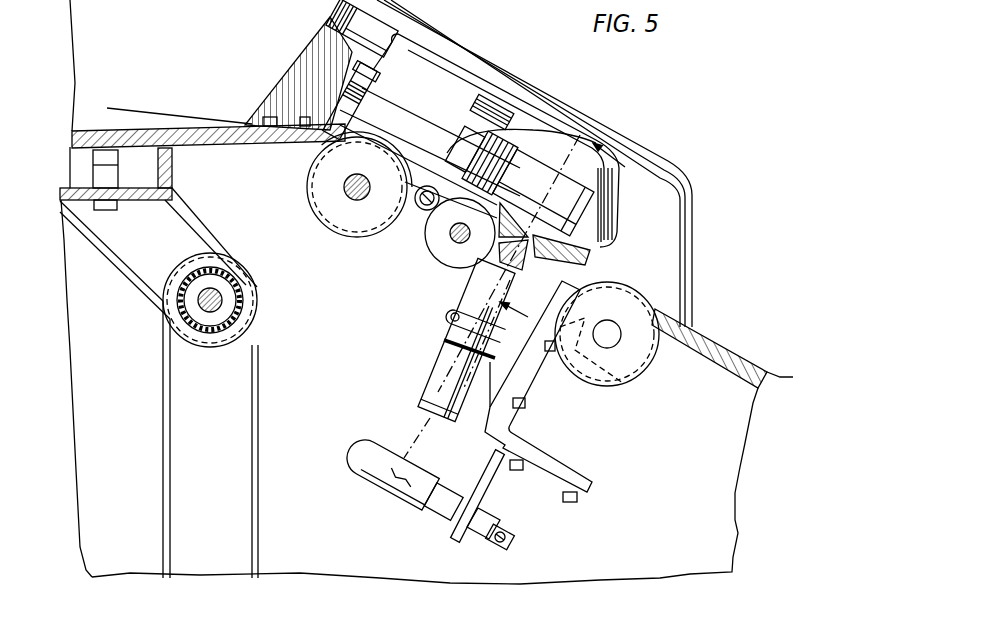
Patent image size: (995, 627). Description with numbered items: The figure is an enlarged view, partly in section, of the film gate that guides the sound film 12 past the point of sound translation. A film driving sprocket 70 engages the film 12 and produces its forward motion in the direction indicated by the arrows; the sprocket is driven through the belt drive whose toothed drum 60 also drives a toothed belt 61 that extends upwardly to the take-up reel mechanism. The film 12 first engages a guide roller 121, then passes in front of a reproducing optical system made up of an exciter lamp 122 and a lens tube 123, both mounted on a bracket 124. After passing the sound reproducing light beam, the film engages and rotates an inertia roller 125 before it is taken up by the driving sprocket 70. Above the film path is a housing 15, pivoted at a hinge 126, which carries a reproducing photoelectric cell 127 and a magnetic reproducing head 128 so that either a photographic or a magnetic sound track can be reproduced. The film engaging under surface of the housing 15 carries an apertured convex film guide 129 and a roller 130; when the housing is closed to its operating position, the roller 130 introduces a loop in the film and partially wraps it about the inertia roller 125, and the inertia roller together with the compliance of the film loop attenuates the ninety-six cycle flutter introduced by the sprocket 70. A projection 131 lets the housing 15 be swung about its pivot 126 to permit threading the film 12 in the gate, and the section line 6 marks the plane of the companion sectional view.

The section line 6- 6 is at (537, 263).
The sound film 12 is at (717, 337).
The housing 15 is at (614, 203).
The toothed drum 60 is at (200, 347).
The toothed belt 61 is at (258, 373).
The film driving sprocket 70 is at (358, 240).
The guide roller 121 is at (635, 368).
The exciter lamp 122 is at (353, 448).
The lens tube 123 is at (430, 389).
The bracket 124 is at (550, 462).
The inertia roller 125 is at (447, 253).
The hinge 126 is at (330, 16).
The reproducing photoelectric cell 127 is at (530, 182).
The magnetic reproducing head 128 is at (575, 170).
The apertured convex film guide 129 is at (588, 252).
The roller 130 is at (423, 210).
The projection 131 is at (502, 110).